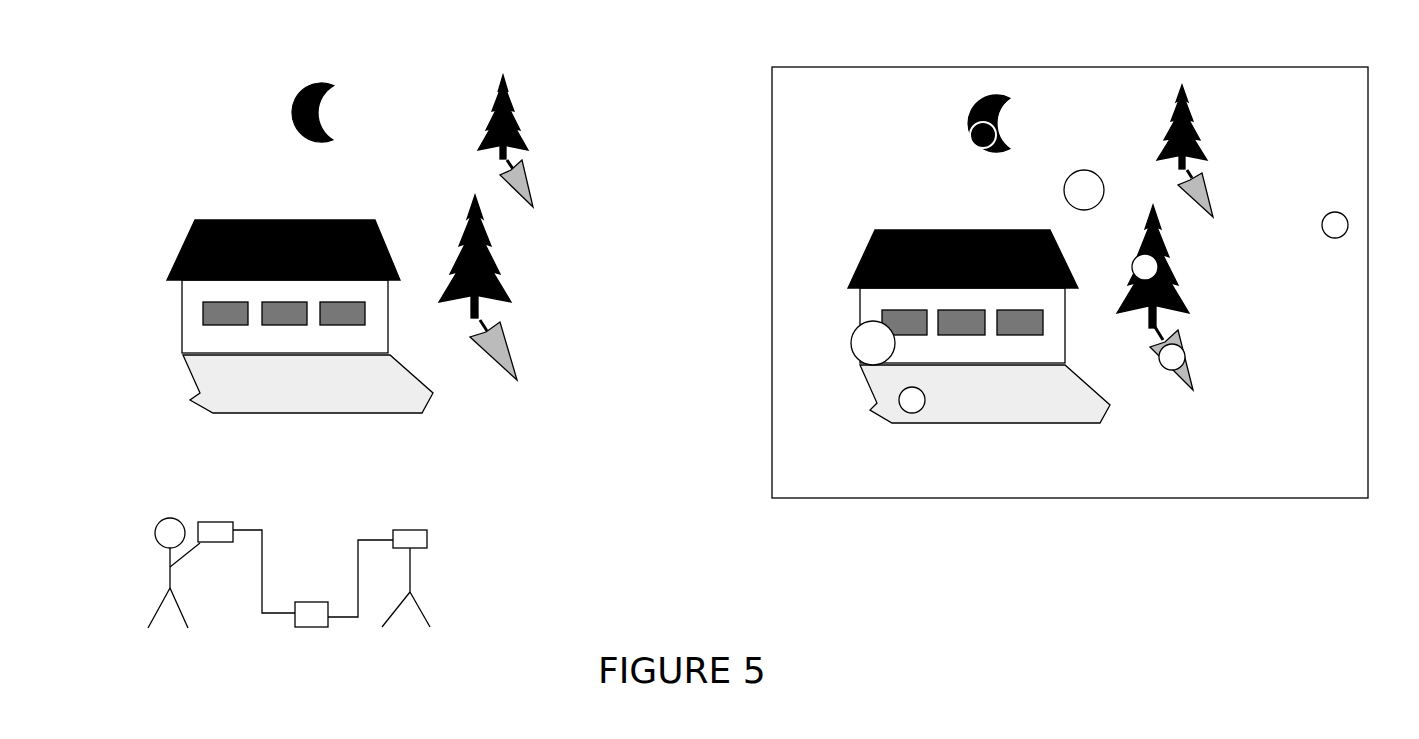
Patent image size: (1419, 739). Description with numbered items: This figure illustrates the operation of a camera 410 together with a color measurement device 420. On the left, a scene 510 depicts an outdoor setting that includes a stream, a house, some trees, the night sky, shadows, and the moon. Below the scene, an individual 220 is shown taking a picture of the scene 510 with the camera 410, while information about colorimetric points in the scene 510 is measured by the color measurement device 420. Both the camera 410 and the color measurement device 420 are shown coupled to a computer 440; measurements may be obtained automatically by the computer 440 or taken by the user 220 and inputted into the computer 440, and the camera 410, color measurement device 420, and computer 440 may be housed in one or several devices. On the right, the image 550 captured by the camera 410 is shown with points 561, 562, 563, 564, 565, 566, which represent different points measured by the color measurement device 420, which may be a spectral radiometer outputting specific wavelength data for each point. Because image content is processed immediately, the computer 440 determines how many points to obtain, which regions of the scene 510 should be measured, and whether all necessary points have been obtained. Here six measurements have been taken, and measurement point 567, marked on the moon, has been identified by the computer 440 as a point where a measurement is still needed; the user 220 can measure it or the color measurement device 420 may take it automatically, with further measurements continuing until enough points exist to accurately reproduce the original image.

The scene 510 is at (182, 114).
The individual 220 is at (170, 588).
The camera 410 is at (220, 537).
The computer 440 is at (307, 618).
The color measurement device 420 is at (415, 540).
The image 550 is at (775, 468).
The measurement point 567 is at (992, 98).
The point 566 is at (852, 322).
The point 565 is at (902, 413).
The point 564 is at (1070, 207).
The point 563 is at (1133, 262).
The point 562 is at (1160, 363).
The point 561 is at (1322, 233).